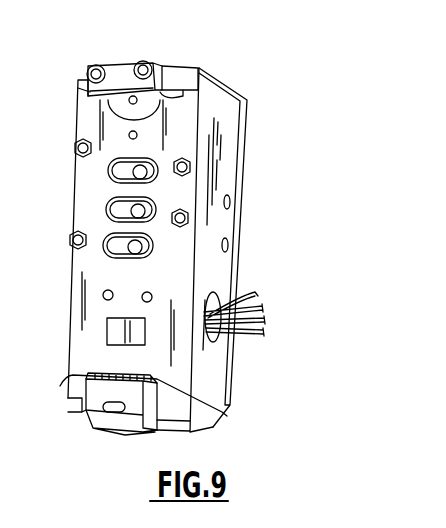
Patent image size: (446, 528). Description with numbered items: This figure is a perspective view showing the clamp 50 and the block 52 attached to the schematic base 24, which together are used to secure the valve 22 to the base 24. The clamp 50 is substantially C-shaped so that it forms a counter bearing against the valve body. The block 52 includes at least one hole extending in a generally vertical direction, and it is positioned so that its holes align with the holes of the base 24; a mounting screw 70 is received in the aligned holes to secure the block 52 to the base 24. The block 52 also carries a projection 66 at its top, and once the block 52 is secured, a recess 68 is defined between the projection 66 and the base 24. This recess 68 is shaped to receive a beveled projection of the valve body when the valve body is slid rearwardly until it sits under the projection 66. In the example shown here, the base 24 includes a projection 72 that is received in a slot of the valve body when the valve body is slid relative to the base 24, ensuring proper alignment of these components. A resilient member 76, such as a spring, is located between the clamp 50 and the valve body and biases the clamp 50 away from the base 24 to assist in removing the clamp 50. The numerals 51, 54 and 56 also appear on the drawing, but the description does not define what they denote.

The valve 22 is at (265, 92).
The base 24 is at (222, 184).
The clamp 50 is at (132, 416).
The lip 51 is at (98, 427).
The block 52 is at (120, 75).
The slot 54 is at (82, 399).
The bottom wall 56 is at (222, 411).
The projection 66 is at (77, 88).
The recess 68 is at (183, 91).
The mounting screw 70 is at (95, 63).
The projection 72 is at (95, 112).
The resilient member 76 is at (73, 376).